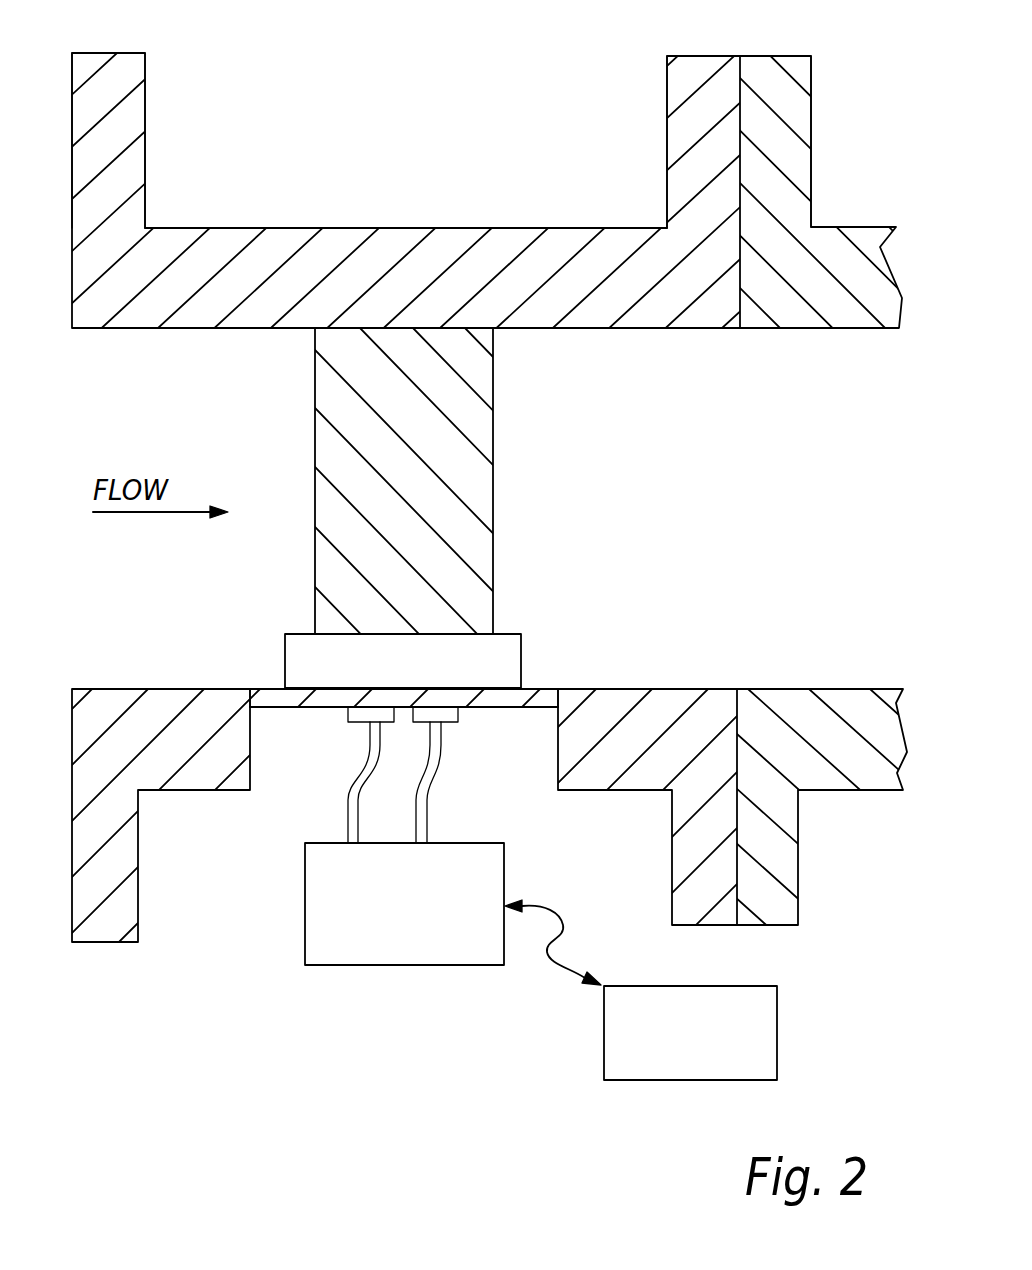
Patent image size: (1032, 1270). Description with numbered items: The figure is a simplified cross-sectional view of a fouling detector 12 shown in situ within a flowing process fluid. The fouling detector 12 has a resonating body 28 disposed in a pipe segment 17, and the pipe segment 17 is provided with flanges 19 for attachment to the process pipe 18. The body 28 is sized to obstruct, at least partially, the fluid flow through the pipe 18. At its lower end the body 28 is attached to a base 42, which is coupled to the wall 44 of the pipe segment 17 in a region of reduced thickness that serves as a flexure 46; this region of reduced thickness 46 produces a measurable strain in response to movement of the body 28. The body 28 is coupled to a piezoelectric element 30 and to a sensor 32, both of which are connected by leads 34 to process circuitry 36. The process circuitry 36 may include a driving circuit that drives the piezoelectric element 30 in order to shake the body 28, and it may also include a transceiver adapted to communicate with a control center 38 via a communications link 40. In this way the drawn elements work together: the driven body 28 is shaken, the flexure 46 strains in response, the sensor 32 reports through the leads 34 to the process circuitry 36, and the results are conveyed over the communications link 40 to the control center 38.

The fouling detector 12 is at (527, 585).
The pipe segment 17 is at (232, 196).
The process pipe 18 is at (516, 190).
The flanges 19 is at (101, 53).
The resonating body 28 is at (496, 362).
The piezoelectric element 30 is at (370, 713).
The sensor 32 is at (440, 712).
The leads 34 is at (428, 823).
The process circuitry 36 is at (388, 968).
The control center 38 is at (700, 986).
The communications link 40 is at (558, 912).
The base 42 is at (508, 670).
The wall 44 is at (612, 689).
The flexure 46 is at (312, 707).